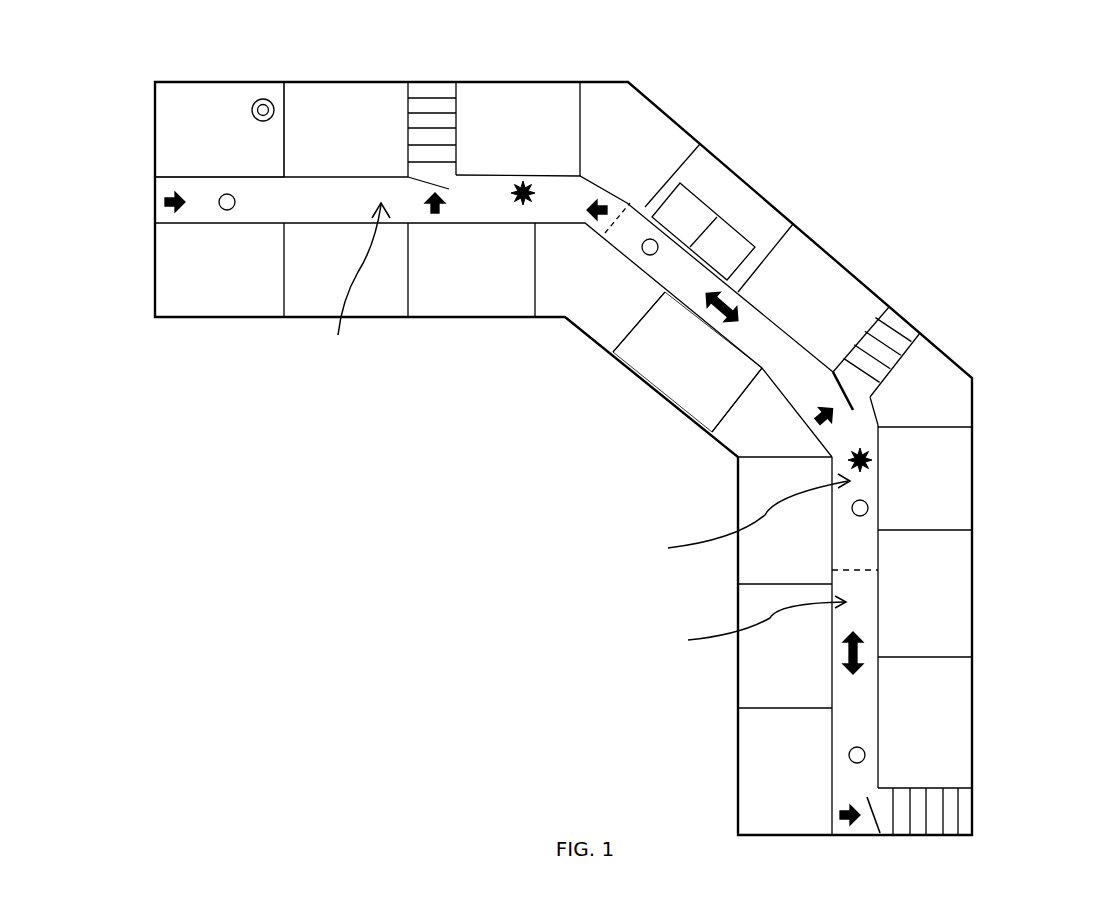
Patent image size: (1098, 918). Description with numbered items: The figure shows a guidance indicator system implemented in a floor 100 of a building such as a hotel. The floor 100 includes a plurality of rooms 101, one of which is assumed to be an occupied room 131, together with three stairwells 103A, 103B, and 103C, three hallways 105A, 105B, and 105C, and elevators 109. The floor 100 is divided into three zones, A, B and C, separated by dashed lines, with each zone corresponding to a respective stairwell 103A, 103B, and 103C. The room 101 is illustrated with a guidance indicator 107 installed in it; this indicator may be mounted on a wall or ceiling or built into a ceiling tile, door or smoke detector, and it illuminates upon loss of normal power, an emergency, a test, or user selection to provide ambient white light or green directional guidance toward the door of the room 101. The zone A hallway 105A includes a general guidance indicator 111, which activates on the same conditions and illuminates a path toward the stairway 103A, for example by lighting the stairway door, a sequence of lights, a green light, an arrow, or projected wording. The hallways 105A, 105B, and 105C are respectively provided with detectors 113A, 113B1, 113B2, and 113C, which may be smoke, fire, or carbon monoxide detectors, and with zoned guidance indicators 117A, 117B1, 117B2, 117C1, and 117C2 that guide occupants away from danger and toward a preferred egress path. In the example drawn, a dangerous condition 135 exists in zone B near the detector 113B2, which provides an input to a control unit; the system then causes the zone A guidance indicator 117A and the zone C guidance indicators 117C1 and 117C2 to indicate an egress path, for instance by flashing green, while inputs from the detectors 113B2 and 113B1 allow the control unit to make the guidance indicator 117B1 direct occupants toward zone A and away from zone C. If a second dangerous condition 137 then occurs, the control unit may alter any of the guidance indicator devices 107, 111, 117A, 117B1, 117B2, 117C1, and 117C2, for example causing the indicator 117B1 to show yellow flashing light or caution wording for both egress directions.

The floor 100 is at (946, 120).
The room 101 is at (219, 129).
The stairwell 103A is at (433, 95).
The stairwell 103B is at (893, 322).
The stairwell 103C is at (958, 815).
The hallway 105A is at (351, 285).
The hallway 105B is at (732, 516).
The hallway 105C is at (738, 622).
The guidance indicator 107 is at (265, 99).
The elevators 109 is at (690, 192).
The general guidance indicator 111 is at (165, 206).
The detector 113A is at (220, 208).
The detector 113B1 is at (645, 252).
The detector 113B2 is at (869, 508).
The detector 113C is at (866, 756).
The zoned guidance indicator 117A is at (607, 205).
The zoned guidance indicator 117B1 is at (710, 320).
The zoned guidance indicator 117B2 is at (812, 412).
The zoned guidance indicator 117C1 is at (845, 667).
The zoned guidance indicator 117C2 is at (838, 812).
The occupied room 131 is at (687, 362).
The dangerous condition 135 is at (873, 456).
The second dangerous condition 137 is at (530, 186).